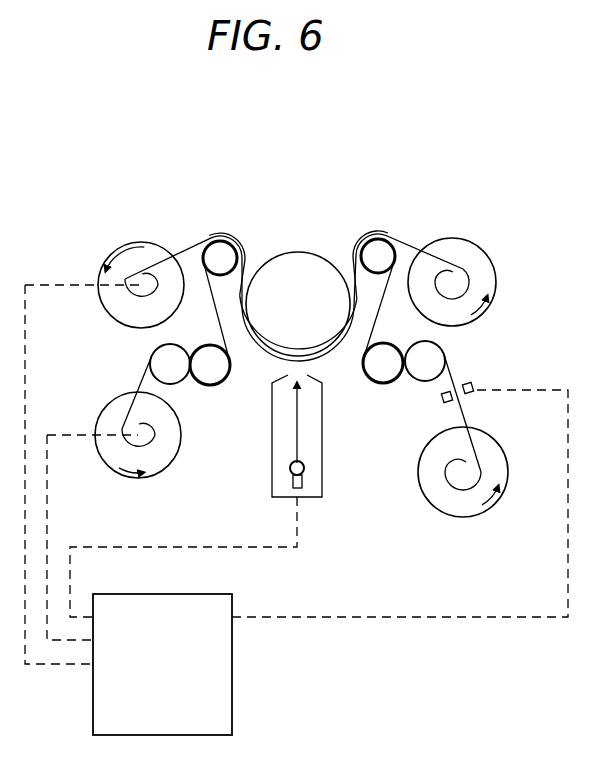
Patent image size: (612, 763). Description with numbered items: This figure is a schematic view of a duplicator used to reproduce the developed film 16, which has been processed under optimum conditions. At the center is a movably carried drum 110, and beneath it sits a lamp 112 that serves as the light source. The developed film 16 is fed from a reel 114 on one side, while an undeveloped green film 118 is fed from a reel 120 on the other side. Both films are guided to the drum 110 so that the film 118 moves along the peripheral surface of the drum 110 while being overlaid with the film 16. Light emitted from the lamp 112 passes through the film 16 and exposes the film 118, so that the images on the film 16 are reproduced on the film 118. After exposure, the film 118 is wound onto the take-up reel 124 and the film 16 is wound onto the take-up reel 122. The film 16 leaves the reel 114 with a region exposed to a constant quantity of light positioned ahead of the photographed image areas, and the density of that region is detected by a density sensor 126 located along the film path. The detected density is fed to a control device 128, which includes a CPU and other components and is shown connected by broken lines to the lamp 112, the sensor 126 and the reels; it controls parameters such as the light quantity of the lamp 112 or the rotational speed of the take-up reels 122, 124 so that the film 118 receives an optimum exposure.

The developed film 16 is at (445, 480).
The drum 110 is at (300, 252).
The lamp 112 is at (304, 464).
The reel 114 is at (462, 517).
The undeveloped green film 118 is at (407, 240).
The reel 120 is at (491, 262).
The take-up reel 122 is at (158, 477).
The take-up reel 124 is at (152, 243).
The density sensor 126 is at (473, 384).
The control device 128 is at (232, 710).